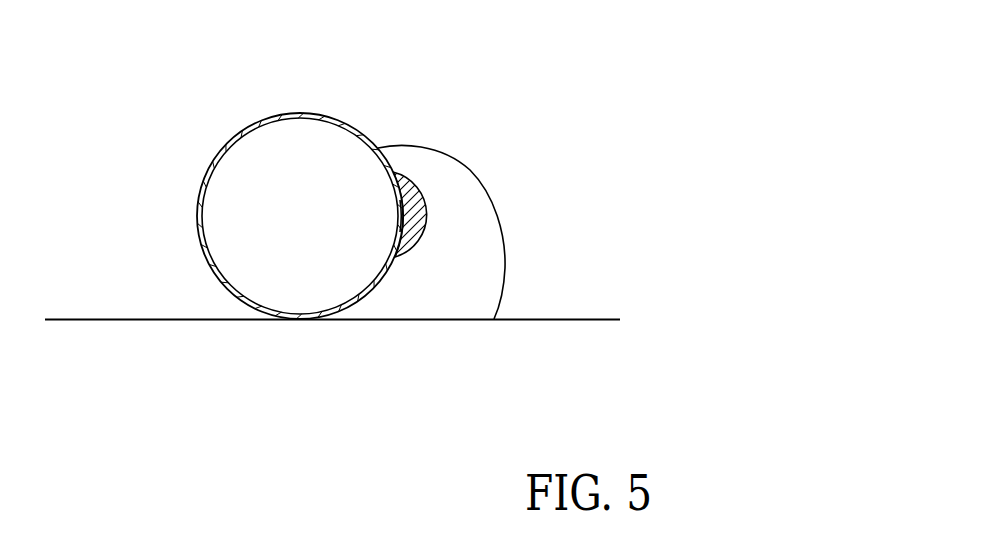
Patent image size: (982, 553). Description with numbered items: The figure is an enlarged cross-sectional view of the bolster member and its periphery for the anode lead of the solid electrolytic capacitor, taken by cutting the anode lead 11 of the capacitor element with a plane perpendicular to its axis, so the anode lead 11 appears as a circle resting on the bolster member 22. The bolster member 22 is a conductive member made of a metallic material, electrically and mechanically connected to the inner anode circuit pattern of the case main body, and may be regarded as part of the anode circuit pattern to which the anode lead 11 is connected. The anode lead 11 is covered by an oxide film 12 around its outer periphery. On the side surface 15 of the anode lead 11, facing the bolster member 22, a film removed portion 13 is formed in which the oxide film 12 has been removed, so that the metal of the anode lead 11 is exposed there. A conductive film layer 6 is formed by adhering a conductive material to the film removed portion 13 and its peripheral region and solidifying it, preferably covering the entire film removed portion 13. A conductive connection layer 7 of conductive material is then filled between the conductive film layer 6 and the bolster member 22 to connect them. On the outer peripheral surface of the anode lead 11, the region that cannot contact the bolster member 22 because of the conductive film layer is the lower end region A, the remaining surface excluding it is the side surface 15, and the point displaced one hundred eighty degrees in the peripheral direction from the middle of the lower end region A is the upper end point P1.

The conductive film layer 6 is at (427, 212).
The conductive connection layer 7 is at (470, 258).
The anode lead 11 is at (325, 155).
The oxide film 12 is at (237, 137).
The film removed portion 13 is at (402, 212).
The side surface 15 is at (200, 190).
The bolster member 22 is at (575, 318).
The upper end point P1 is at (303, 115).
The lower end region A is at (305, 316).